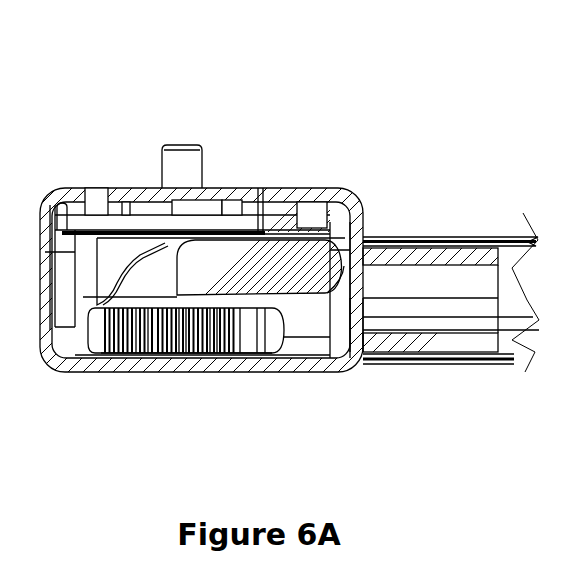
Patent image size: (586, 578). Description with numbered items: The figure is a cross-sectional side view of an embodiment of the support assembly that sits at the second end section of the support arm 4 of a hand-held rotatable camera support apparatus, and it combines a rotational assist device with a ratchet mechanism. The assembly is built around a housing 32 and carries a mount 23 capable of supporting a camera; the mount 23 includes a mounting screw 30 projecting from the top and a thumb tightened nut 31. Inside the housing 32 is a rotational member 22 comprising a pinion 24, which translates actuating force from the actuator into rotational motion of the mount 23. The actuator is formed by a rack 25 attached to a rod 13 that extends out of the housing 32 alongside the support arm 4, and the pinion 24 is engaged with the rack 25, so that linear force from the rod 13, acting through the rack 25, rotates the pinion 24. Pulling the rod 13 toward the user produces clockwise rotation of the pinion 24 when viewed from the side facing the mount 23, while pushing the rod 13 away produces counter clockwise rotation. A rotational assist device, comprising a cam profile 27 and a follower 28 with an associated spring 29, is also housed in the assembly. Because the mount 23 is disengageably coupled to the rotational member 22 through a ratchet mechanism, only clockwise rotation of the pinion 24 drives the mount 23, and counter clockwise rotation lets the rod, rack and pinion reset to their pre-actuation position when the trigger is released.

The support arm 4 is at (478, 236).
The rod 13 is at (424, 316).
The rotational member 22 is at (162, 353).
The mount 23 is at (160, 250).
The pinion 24 is at (199, 353).
The rack 25 is at (133, 356).
The cam profile 27 is at (124, 268).
The follower 28 is at (306, 308).
The spring 29 is at (361, 312).
The mounting screw 30 is at (201, 143).
The thumb tightened nut 31 is at (245, 187).
The housing 32 is at (92, 375).